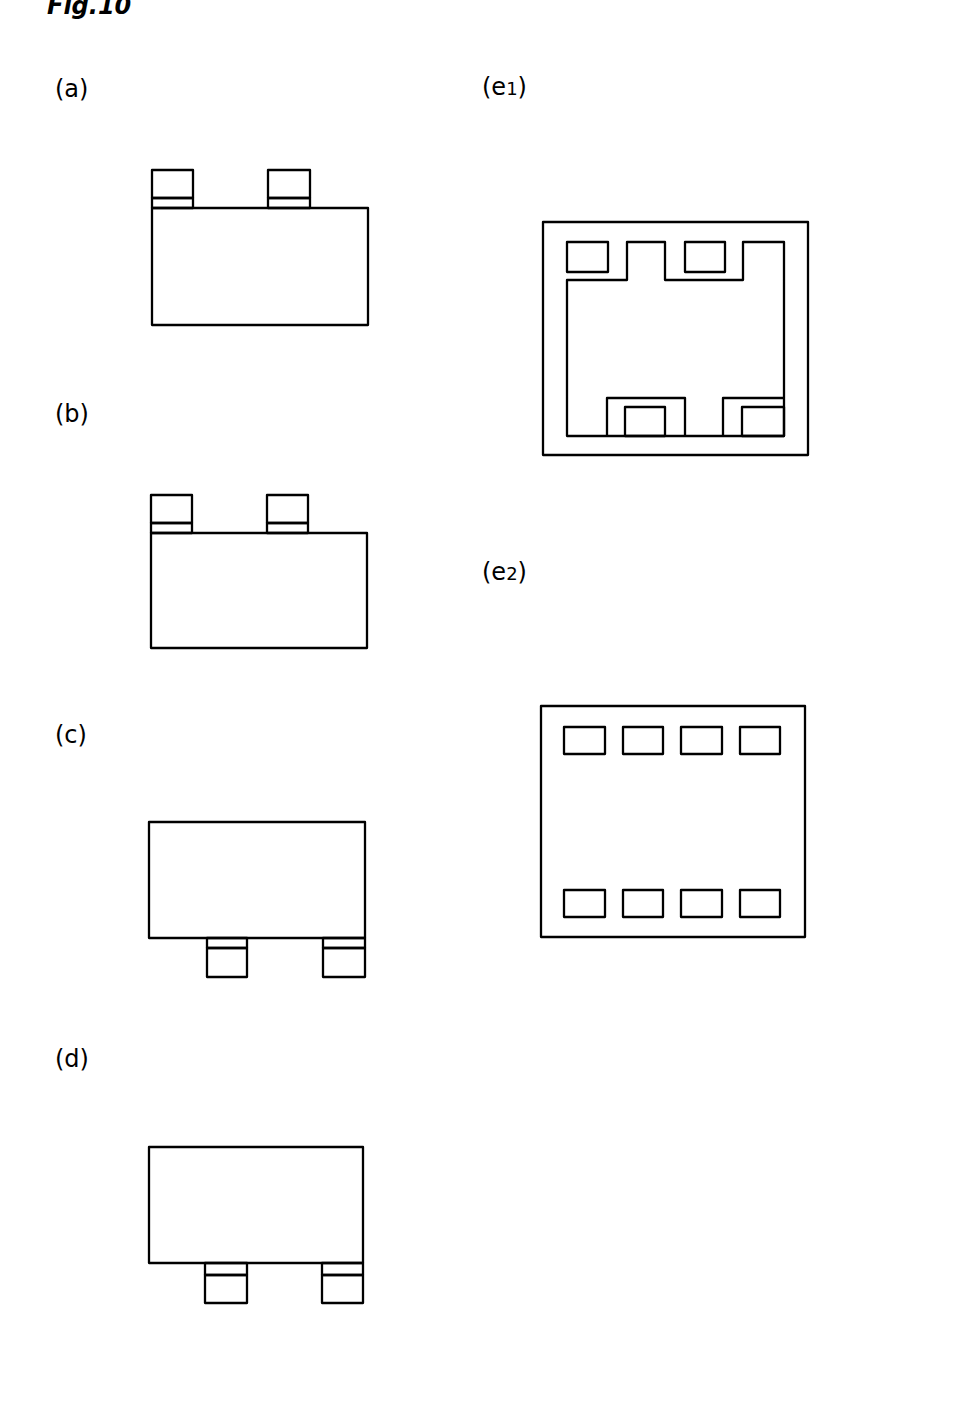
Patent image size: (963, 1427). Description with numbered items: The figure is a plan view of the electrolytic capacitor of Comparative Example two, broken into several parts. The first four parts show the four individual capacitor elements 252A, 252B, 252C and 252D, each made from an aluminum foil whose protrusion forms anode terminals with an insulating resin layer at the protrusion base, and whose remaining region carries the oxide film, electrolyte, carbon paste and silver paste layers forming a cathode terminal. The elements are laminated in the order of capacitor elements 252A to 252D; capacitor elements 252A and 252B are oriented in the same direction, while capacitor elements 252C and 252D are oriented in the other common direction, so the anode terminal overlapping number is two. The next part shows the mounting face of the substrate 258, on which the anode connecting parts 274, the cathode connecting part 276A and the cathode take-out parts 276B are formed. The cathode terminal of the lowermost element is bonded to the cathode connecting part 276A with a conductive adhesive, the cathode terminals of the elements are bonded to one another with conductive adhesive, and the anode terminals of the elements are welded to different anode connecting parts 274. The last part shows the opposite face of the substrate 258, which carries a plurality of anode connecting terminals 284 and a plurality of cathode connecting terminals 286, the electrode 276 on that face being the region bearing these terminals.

The capacitor element 252A is at (321, 144).
The capacitor element 252B is at (318, 471).
The capacitor element 252C is at (315, 813).
The capacitor element 252D is at (313, 1138).
The substrate 258 is at (748, 140).
The anode connecting part 274 is at (587, 250).
The cathode connecting part 276A is at (768, 337).
The cathode take-out part 276B is at (645, 252).
The back-side electrode 276 is at (767, 820).
The anode connecting terminal 284 is at (585, 737).
The cathode connecting terminal 286 is at (643, 737).